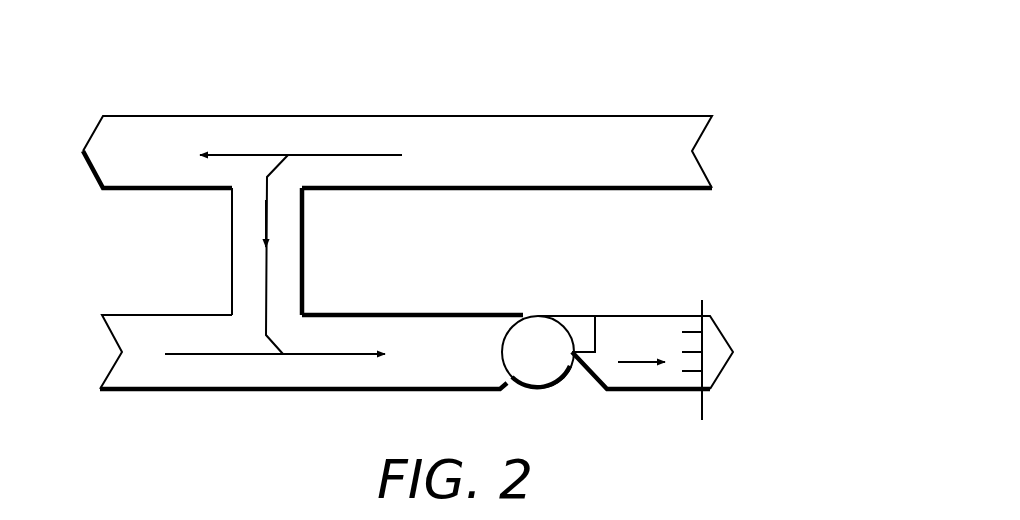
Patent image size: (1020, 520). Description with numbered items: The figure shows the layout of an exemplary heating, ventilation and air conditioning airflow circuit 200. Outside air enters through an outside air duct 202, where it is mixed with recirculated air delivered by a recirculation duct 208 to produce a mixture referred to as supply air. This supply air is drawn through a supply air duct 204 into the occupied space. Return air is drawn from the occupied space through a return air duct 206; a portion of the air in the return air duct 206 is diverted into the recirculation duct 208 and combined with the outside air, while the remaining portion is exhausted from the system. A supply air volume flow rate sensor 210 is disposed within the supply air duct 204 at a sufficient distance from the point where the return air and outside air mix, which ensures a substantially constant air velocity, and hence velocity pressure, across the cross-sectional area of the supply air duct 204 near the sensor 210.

The HVAC airflow circuit 200 is at (289, 92).
The outside air duct 202 is at (170, 391).
The supply air duct 204 is at (450, 315).
The return air duct 206 is at (452, 115).
The recirculation duct 208 is at (303, 257).
The supply air volume flow rate sensor 210 is at (702, 315).